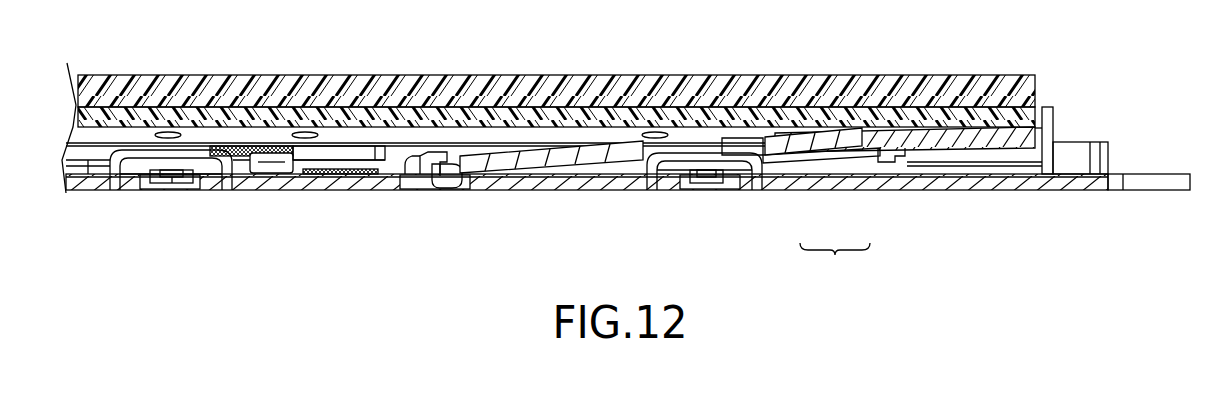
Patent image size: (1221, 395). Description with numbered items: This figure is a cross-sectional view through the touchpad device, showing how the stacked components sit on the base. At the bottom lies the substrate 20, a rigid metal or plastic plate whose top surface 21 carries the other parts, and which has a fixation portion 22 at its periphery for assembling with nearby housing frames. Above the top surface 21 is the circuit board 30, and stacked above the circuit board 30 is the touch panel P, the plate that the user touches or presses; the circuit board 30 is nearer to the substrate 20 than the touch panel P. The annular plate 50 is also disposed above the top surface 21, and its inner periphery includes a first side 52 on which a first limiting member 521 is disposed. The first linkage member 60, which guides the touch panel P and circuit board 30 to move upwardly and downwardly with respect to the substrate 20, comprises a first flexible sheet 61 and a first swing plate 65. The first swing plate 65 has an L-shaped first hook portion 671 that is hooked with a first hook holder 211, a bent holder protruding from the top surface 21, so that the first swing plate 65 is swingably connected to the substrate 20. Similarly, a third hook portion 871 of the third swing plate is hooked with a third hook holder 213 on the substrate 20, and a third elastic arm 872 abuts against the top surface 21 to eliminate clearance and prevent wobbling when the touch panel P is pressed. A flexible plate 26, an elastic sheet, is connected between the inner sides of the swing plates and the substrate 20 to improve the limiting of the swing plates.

The touch panel P is at (775, 85).
The circuit board 30 is at (820, 120).
The first side 52 is at (897, 137).
The top surface 21 is at (980, 164).
The annular plate 50 is at (1047, 108).
The third hook holder 213 is at (137, 160).
The third hook portion 871 is at (185, 174).
The third elastic arm 872 is at (271, 166).
The flexible plate 26 is at (341, 170).
The first hook holder 211 is at (410, 167).
The first hook portion 671 is at (456, 186).
The first flexible sheet 61 is at (821, 160).
The first swing plate 65 is at (856, 150).
The first linkage member 60 is at (835, 263).
The first limiting member 521 is at (897, 160).
The substrate 20 is at (1067, 190).
The fixation portion 22 is at (1145, 190).